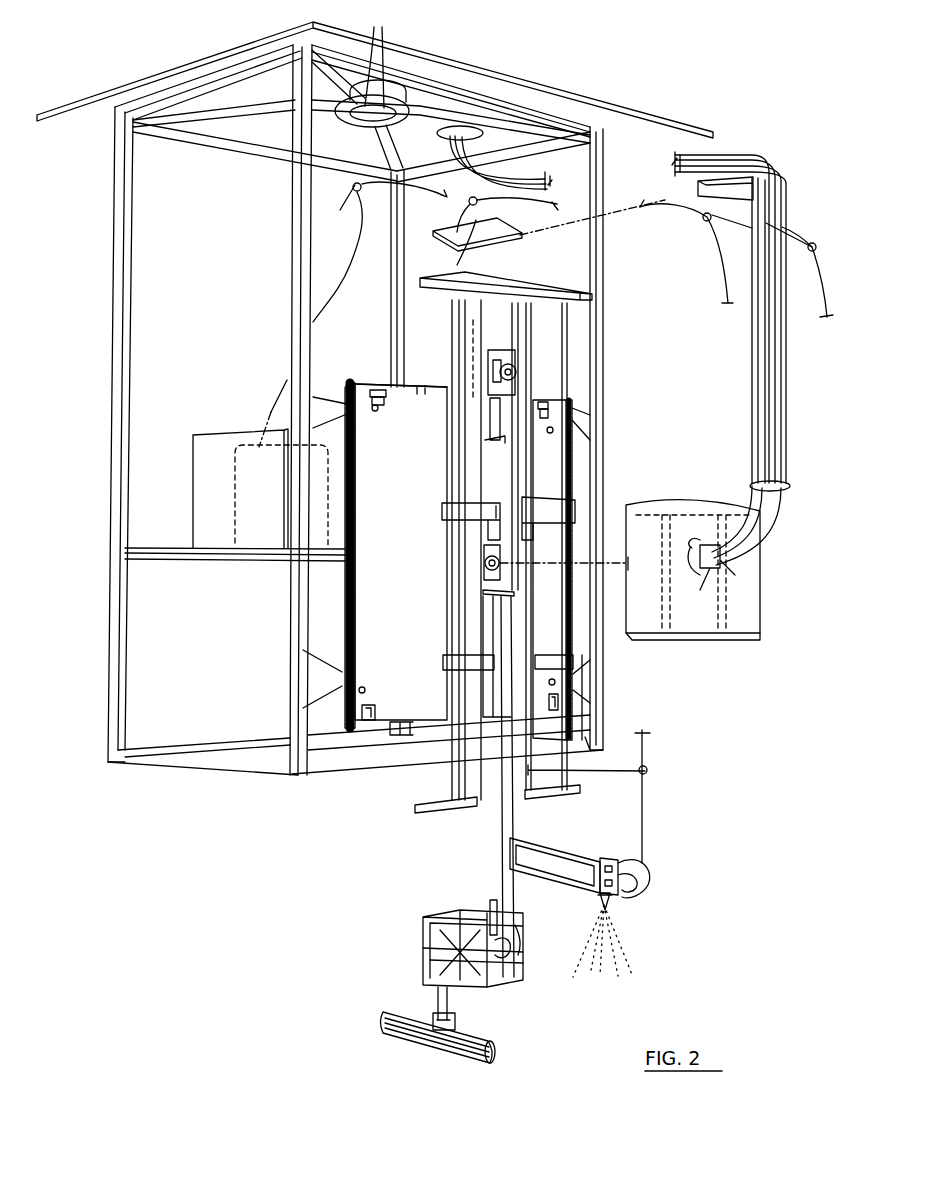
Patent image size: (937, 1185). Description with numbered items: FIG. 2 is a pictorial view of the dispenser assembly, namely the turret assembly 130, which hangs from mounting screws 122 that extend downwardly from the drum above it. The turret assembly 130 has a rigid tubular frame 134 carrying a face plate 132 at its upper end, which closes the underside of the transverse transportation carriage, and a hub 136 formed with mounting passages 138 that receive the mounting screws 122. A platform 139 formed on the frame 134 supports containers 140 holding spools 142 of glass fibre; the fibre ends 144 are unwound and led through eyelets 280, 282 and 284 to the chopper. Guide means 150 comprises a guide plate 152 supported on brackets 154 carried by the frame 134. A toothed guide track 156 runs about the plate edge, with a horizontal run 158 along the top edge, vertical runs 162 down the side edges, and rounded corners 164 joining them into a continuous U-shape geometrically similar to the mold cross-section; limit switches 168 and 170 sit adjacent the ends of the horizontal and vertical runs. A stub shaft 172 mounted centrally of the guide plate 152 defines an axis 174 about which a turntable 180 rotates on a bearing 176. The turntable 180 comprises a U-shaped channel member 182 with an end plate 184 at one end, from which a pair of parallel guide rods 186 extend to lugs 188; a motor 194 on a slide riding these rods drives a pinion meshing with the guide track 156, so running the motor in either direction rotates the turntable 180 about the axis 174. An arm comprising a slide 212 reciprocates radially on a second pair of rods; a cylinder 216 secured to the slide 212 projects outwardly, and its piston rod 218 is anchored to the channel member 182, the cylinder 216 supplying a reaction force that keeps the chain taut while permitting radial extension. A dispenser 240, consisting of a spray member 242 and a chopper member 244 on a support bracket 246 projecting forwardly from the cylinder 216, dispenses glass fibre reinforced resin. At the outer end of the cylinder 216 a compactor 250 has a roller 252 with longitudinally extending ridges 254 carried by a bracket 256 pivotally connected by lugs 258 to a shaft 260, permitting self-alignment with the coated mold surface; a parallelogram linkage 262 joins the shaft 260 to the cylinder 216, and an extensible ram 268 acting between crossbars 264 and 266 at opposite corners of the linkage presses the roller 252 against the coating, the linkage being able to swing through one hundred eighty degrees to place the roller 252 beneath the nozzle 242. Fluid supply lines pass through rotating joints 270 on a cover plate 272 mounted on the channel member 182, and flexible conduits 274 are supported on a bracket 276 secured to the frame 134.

The mounting screws 122 is at (485, 597).
The turret assembly 130 is at (184, 795).
The face plate 132 is at (235, 60).
The frame 134 is at (104, 424).
The hub 136 is at (393, 92).
The mounting passages 138 is at (380, 195).
The platform 139 is at (236, 557).
The containers 140 is at (219, 438).
The spools of glass fibre 142 is at (255, 477).
The end of the spool of glass fibre 144 is at (257, 411).
The guide means 150 is at (443, 563).
The guide plate 152 is at (367, 625).
The brackets 154 is at (322, 403).
The guide track 156 is at (353, 522).
The horizontal run 158 is at (415, 394).
The vertical runs 162 is at (357, 478).
The rounded corners 164 is at (362, 384).
The limit switches 168 is at (367, 702).
The limit switches 170 is at (385, 405).
The stub shaft 172 is at (485, 573).
The axis 174 is at (620, 570).
The bearing 176 is at (487, 553).
The turntable 180 is at (530, 542).
The U-shaped channel member 182 is at (540, 375).
The end plate 184 is at (565, 300).
The guide rods 186 is at (505, 296).
The lugs 188 is at (503, 437).
The motor 194 is at (505, 360).
The slide 212 is at (483, 493).
The cylinder 216 is at (507, 822).
The piston rod 218 is at (512, 622).
The dispenser 240 is at (646, 898).
The spray member 242 is at (599, 860).
The chopper member 244 is at (637, 893).
The support bracket 246 is at (555, 887).
The compactor 250 is at (444, 981).
The roller 252 is at (451, 1048).
The bristles 254 is at (467, 1052).
The bracket 256 is at (494, 1051).
The lugs 258 is at (455, 1018).
The shaft 260 is at (435, 998).
The parallelogram linkage 262 is at (423, 933).
The crossbar 264 is at (440, 952).
The crossbar 266 is at (517, 938).
The extensible ram 268 is at (493, 933).
The rotating joints 270 is at (713, 533).
The cover plate 272 is at (738, 612).
The flexible conduits 274 is at (757, 403).
The bracket 276 is at (757, 360).
The eyelet 280 is at (365, 212).
The eyelet 282 is at (703, 219).
The eyelet 284 is at (650, 772).